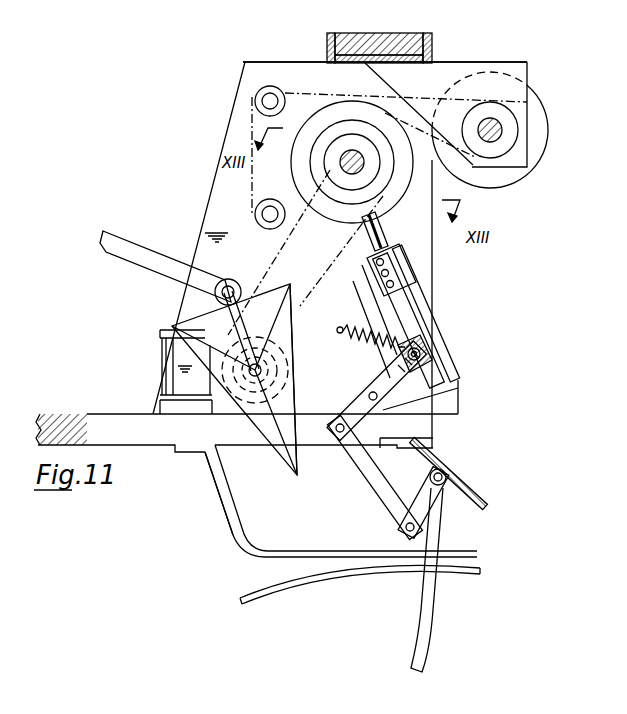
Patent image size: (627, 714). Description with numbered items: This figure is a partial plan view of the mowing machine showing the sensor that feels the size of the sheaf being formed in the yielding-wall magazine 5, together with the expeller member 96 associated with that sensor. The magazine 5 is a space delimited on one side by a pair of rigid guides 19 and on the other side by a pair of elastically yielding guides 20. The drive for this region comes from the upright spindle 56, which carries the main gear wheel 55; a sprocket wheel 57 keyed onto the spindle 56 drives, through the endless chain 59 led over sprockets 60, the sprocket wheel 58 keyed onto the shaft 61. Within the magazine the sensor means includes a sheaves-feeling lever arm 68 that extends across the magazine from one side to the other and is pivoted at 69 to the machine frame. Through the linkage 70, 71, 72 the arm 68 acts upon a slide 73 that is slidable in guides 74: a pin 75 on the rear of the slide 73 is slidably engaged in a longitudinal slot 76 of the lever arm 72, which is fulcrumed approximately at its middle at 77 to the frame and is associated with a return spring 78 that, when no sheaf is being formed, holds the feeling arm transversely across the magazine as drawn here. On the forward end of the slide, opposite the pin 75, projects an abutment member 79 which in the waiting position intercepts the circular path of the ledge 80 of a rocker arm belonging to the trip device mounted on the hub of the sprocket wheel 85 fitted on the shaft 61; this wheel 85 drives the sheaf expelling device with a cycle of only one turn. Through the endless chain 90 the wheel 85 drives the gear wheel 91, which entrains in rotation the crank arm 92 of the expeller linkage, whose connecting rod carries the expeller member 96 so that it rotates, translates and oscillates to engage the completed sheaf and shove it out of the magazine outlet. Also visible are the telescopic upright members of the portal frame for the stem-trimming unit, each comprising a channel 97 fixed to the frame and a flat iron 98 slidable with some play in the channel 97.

The magazine 5 is at (217, 535).
The rigid guides 19 is at (213, 468).
The elastically yielding guides 20 is at (331, 581).
The main gear wheel 55 is at (543, 147).
The upright spindle 56 is at (495, 125).
The sprocket wheel 57 is at (512, 122).
The sprocket wheel 58 is at (308, 127).
The endless chain 59 is at (250, 125).
The sprockets 60 is at (255, 100).
The shaft 61 is at (343, 153).
The sheaves-feeling lever arm 68 is at (434, 626).
The pivot 69 is at (447, 482).
The linkage member 70 is at (440, 524).
The linkage member 71 is at (398, 508).
The lever arm 72 is at (372, 420).
The slide 73 is at (402, 305).
The guides 74 is at (430, 323).
The pin 75 is at (422, 356).
The longitudinal slot 76 is at (428, 372).
The fulcrum 77 is at (369, 396).
The return spring 78 is at (352, 348).
The abutment member 79 is at (387, 246).
The ledge 80 is at (386, 224).
The sprocket wheel 85 is at (342, 185).
The endless chain 90 is at (282, 251).
The gear wheel 91 is at (254, 378).
The crank arm 92 is at (213, 322).
The expeller member 96 is at (291, 285).
The channel 97 is at (432, 62).
The flat iron 98 is at (428, 48).